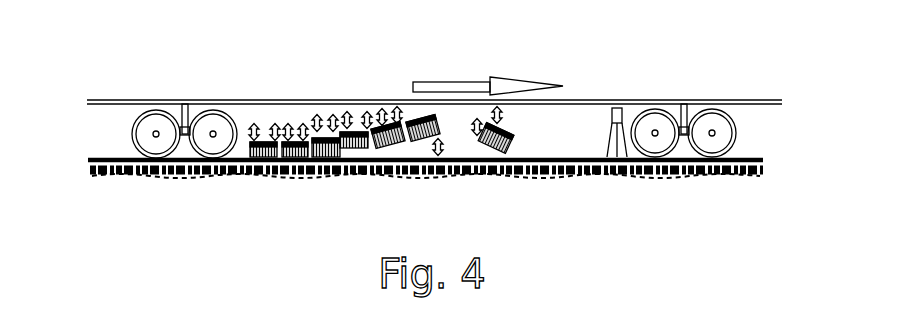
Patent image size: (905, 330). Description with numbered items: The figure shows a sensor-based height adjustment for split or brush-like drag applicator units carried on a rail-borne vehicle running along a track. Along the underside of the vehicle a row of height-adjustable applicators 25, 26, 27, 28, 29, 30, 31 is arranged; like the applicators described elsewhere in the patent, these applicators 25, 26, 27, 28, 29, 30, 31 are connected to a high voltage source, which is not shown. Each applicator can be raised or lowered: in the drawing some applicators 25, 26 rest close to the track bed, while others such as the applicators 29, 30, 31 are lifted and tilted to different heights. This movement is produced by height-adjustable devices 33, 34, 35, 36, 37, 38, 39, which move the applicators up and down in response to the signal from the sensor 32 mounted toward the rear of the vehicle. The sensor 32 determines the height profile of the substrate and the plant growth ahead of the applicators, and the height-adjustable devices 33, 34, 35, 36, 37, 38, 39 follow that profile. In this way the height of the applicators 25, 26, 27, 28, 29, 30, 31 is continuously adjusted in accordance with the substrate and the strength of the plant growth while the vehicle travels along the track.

The height-adjustable applicator 25 is at (262, 157).
The height-adjustable applicator 26 is at (297, 157).
The height-adjustable applicator 27 is at (330, 157).
The height-adjustable applicator 28 is at (360, 148).
The height-adjustable applicator 29 is at (393, 148).
The height-adjustable applicator 30 is at (428, 142).
The height-adjustable applicator 31 is at (507, 153).
The sensor 32 is at (612, 108).
The height-adjustable device 33 is at (262, 133).
The height-adjustable device 34 is at (293, 134).
The height-adjustable device 35 is at (325, 130).
The height-adjustable device 36 is at (357, 125).
The height-adjustable device 37 is at (392, 120).
The height-adjustable device 38 is at (425, 118).
The height-adjustable device 39 is at (497, 100).